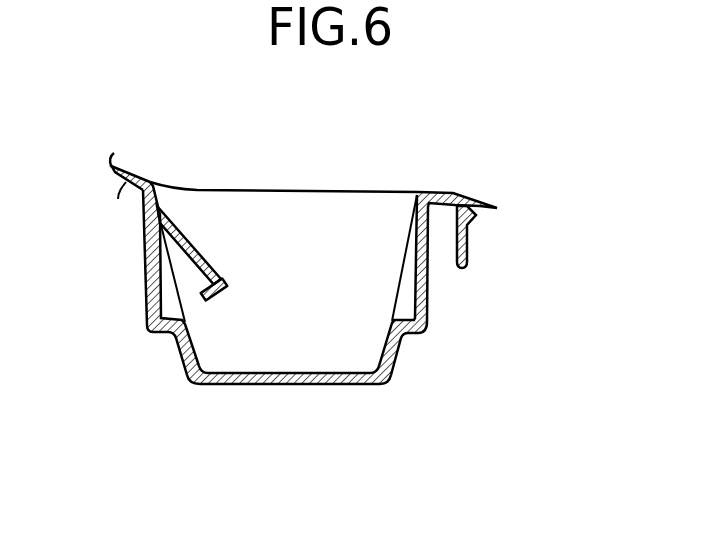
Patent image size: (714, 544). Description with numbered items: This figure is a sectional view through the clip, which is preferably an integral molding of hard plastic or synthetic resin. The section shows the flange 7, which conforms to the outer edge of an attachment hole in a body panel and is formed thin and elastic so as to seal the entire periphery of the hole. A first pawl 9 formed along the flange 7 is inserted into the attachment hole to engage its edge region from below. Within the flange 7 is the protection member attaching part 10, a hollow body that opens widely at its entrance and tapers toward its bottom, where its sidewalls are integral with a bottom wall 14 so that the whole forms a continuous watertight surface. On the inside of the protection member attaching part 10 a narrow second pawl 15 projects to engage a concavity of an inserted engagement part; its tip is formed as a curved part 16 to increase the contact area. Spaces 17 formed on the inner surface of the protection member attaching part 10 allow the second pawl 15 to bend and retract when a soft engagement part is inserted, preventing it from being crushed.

The flange 7 is at (451, 192).
The first pawl 9 is at (475, 221).
The protection member attaching part 10 is at (363, 222).
The bottom wall 14 is at (237, 385).
The second pawl 15 is at (222, 272).
The curved part 16 is at (224, 296).
The space 17 is at (168, 283).